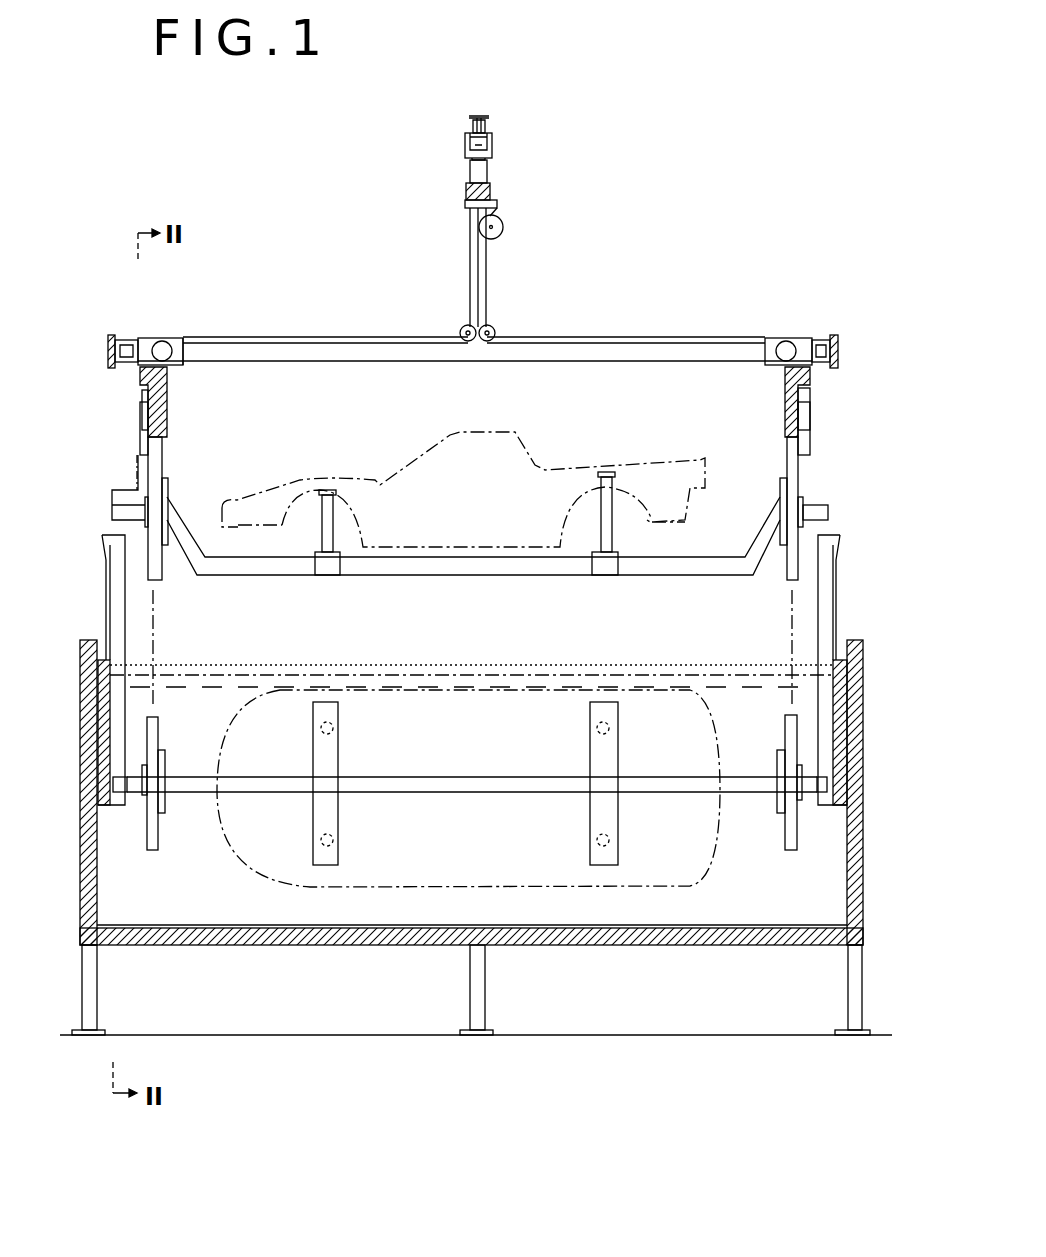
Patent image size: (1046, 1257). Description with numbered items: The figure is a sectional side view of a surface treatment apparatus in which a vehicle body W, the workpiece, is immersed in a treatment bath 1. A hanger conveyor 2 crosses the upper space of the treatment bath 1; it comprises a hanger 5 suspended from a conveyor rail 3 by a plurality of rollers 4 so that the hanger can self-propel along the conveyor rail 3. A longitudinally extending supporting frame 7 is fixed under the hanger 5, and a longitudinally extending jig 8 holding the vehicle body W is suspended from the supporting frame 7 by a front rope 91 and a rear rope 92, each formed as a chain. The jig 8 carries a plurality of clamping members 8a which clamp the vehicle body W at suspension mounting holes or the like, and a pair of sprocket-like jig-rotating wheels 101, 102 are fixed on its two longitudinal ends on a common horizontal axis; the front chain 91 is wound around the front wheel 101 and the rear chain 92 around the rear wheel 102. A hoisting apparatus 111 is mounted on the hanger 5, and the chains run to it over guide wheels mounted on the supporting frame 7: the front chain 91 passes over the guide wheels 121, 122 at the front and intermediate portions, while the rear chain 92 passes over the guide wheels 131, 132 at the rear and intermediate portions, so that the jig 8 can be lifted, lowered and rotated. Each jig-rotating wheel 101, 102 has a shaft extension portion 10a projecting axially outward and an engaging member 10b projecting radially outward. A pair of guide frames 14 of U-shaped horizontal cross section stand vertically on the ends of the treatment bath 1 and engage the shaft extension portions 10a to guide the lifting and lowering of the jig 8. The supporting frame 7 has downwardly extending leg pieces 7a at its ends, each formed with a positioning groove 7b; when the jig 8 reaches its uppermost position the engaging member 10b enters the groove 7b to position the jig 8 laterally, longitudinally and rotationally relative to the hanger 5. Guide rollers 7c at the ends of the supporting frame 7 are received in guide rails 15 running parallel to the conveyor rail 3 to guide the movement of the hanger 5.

The treatment bath 1 is at (268, 932).
The hanger conveyor 2 is at (484, 115).
The conveyor rail 3 is at (470, 125).
The rollers 4 is at (465, 138).
The hanger 5 is at (470, 243).
The left hoisting apparatus 111 is at (492, 230).
The guide wheel for the front chain 122 is at (462, 326).
The guide wheel for the rear chain 132 is at (491, 326).
The supporting frame 7 is at (340, 362).
The leg pieces 7a is at (167, 395).
The positioning groove 7b is at (142, 396).
The guide rollers 7c is at (126, 338).
The front rope (chain) 91 is at (258, 337).
The rear rope (chain) 92 is at (630, 337).
The guide wheel for the front chain 121 is at (163, 341).
The guide wheel for the rear chain 131 is at (786, 341).
The guide rails 15 is at (108, 350).
The shaft extension portion 10a is at (125, 512).
The engaging member 10b is at (140, 440).
The front jig-rotating wheel 101 is at (163, 460).
The rear jig-rotating wheel 102 is at (787, 452).
The guide frames 14 is at (105, 566).
The jig 8 is at (446, 568).
The clamping members 8a is at (328, 490).
The vehicle body W is at (495, 445).